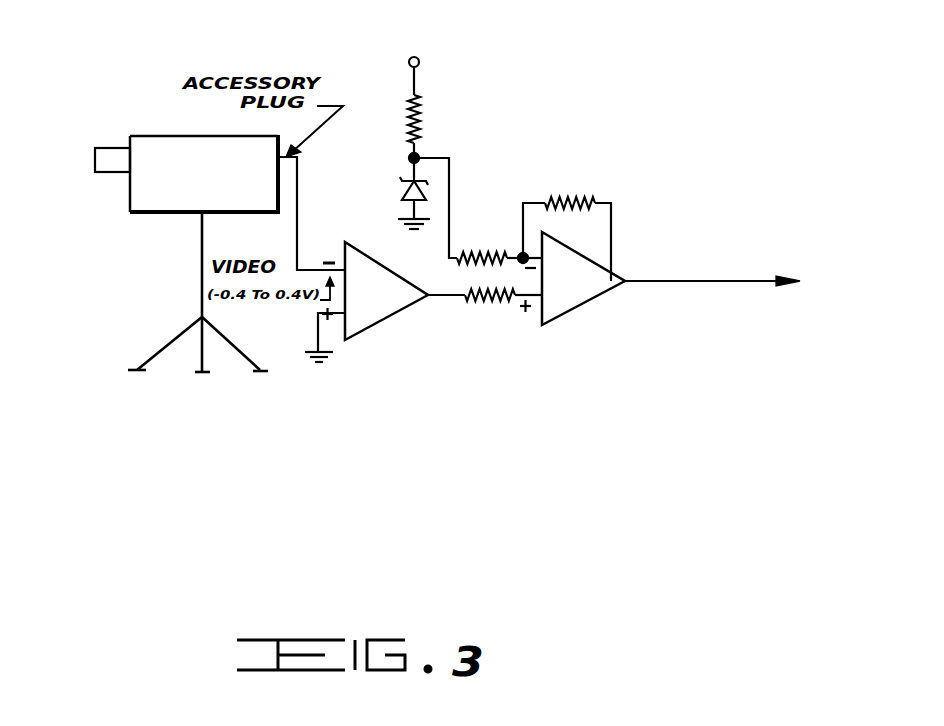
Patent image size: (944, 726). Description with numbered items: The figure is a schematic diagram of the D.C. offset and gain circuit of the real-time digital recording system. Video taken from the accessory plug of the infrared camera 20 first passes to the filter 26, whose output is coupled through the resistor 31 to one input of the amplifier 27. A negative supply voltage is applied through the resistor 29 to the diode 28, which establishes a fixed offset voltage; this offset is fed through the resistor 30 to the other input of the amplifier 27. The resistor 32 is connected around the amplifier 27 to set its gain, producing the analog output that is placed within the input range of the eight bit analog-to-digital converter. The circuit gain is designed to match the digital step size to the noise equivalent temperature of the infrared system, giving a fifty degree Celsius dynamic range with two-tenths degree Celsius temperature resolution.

The infrared camera 20 is at (143, 135).
The filter 26 is at (385, 318).
The amplifier 27 is at (594, 303).
The diode 28 is at (402, 190).
The resistor 29 is at (420, 113).
The resistor 30 is at (490, 250).
The resistor 31 is at (469, 306).
The resistor 32 is at (570, 197).